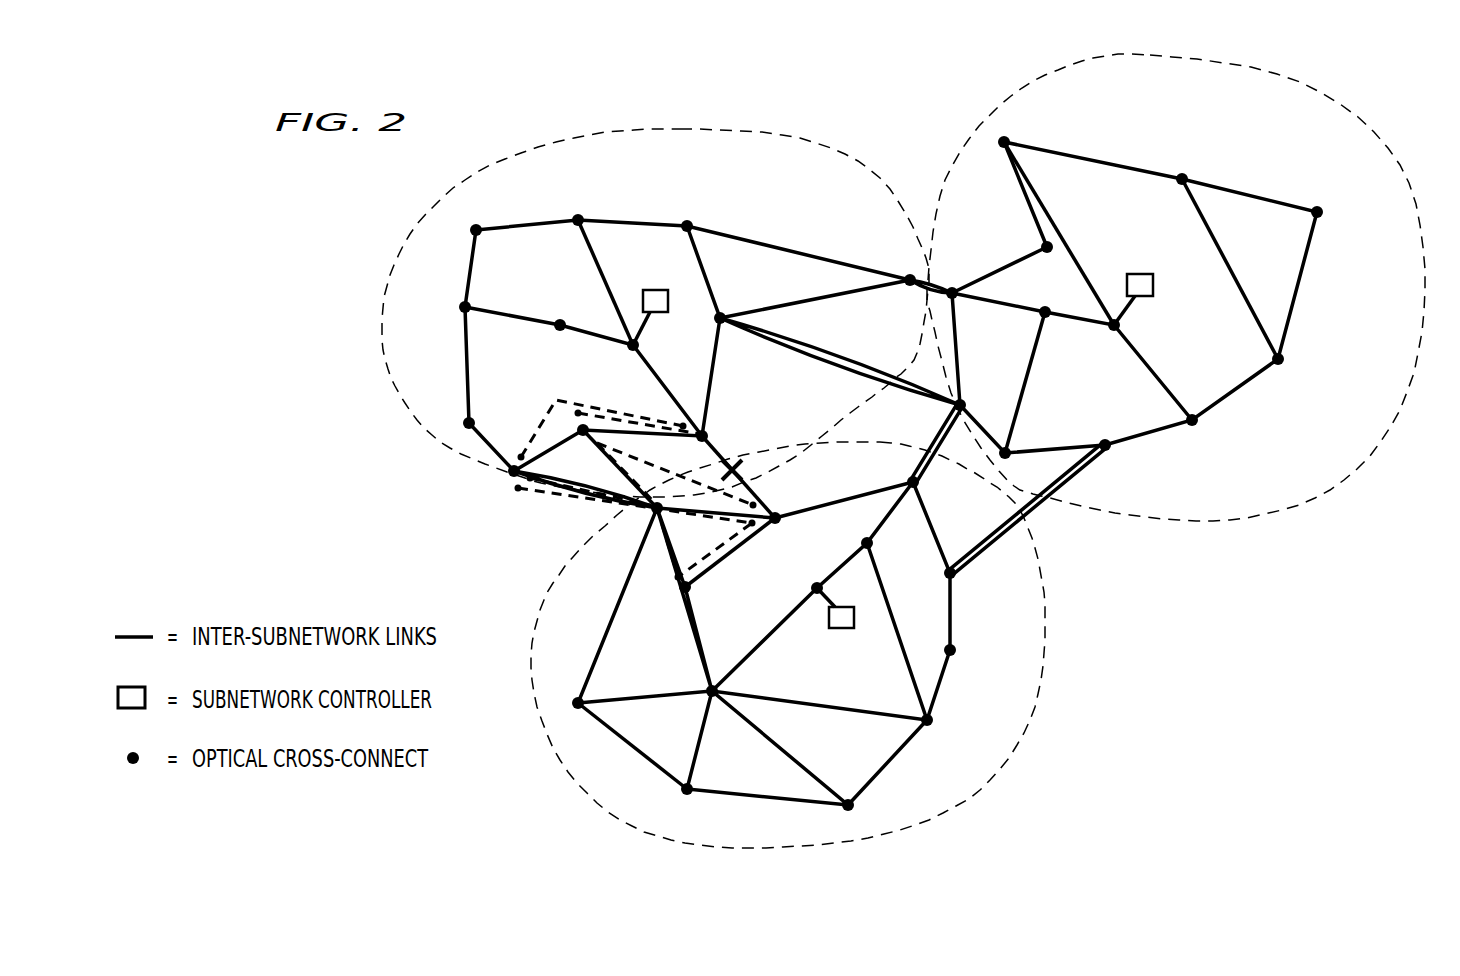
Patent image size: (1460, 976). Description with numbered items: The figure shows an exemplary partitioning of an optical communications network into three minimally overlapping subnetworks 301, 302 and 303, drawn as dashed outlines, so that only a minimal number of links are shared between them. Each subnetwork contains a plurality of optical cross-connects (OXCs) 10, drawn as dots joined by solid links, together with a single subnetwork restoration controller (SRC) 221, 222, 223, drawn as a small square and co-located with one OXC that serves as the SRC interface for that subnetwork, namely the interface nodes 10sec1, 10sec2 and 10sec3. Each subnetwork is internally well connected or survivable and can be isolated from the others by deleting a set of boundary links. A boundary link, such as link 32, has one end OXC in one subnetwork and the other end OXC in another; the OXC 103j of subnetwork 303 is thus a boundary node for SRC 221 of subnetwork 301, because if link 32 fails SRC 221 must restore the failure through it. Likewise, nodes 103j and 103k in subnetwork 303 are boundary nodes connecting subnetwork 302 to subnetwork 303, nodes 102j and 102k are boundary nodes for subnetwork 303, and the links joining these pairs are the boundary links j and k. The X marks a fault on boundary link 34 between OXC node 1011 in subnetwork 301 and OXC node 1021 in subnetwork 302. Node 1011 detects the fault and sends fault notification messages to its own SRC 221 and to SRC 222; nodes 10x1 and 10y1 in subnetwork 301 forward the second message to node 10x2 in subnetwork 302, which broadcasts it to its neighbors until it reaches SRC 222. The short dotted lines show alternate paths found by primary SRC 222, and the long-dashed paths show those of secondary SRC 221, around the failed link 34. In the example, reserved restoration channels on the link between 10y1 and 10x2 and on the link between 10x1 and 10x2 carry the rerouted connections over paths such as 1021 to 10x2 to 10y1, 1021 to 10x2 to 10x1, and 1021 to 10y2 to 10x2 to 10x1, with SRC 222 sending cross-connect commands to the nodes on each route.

The optical cross-connect (OXC) 10 is at (580, 219).
The subnetwork restoration controller 221 is at (649, 290).
The subnetwork restoration controller 222 is at (842, 630).
The subnetwork restoration controller 223 is at (1140, 273).
The SRC interface OXC 10sec1 is at (633, 347).
The SRC interface OXC 10sec2 is at (817, 584).
The SRC interface OXC 10sec3 is at (1118, 325).
The OXC node 10y1 is at (567, 398).
The OXC node 10y2 is at (690, 588).
The OXC node 1011 is at (706, 433).
The OXC node 1021 is at (778, 514).
The OXC node 10x1 is at (510, 474).
The OXC node 10x2 is at (650, 512).
The boundary node 102j is at (912, 488).
The boundary node 102k is at (953, 578).
The boundary node 103j is at (962, 400).
The boundary node 103k is at (1100, 440).
The boundary link 32 is at (822, 352).
The boundary link 34 is at (736, 466).
The boundary link j is at (932, 437).
The boundary link k is at (1032, 512).
The subnetwork 301 is at (678, 130).
The subnetwork 302 is at (720, 848).
The subnetwork 303 is at (1213, 57).